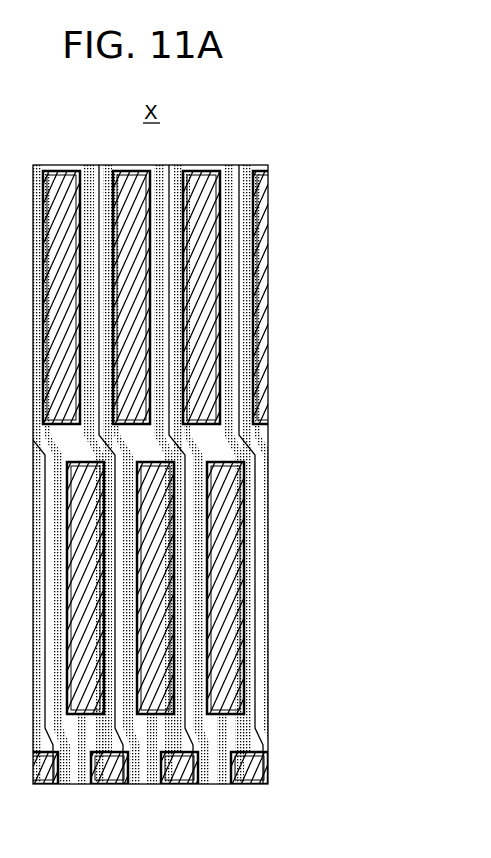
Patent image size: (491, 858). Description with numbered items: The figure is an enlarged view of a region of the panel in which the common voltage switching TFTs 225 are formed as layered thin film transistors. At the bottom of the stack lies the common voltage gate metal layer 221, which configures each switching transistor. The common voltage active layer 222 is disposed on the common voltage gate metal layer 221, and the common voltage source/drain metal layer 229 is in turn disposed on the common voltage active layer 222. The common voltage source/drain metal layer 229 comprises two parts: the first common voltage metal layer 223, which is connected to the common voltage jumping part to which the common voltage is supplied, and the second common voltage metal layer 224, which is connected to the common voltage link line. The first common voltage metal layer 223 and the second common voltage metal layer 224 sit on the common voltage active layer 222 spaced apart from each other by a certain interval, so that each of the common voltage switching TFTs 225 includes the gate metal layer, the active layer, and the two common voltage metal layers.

The common voltage gate metal layer 221 is at (262, 615).
The common voltage active layer 222 is at (253, 578).
The first common voltage metal layer 223 is at (243, 550).
The second common voltage metal layer 224 is at (241, 518).
The common voltage source/drain metal layer 229 is at (337, 510).
The common voltage switching TFTs 225 is at (387, 533).